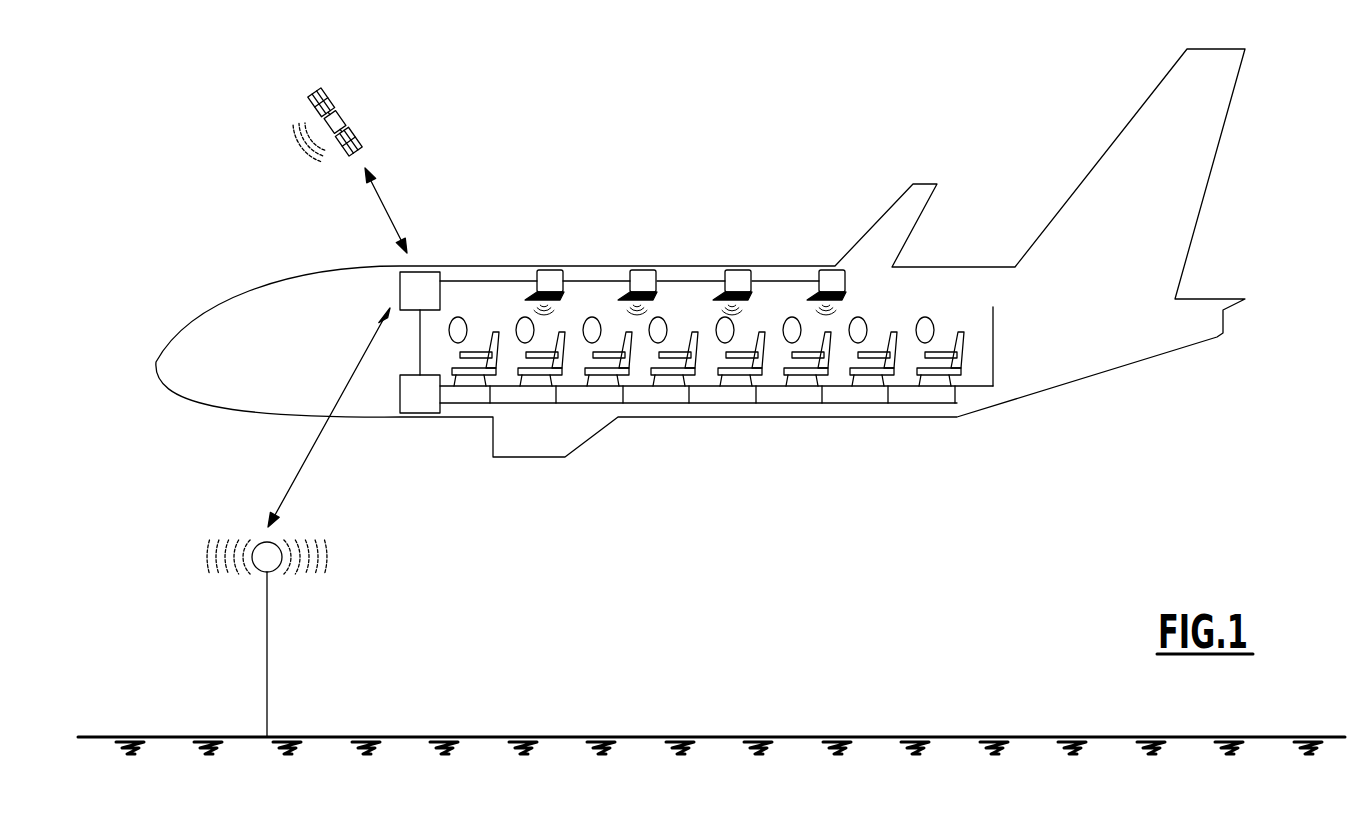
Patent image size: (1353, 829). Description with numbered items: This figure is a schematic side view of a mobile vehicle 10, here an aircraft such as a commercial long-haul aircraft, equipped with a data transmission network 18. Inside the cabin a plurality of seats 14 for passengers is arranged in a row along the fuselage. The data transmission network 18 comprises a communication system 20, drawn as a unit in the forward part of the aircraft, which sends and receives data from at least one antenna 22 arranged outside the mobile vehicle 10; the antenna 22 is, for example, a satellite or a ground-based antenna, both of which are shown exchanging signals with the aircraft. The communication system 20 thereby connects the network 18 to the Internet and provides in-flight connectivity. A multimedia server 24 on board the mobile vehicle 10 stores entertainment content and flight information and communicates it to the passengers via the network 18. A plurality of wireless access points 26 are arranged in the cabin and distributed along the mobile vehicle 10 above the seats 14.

The mobile vehicle 10 is at (1008, 470).
The seats 14 is at (737, 384).
The data transmission network 18 is at (645, 418).
The communication system 20 is at (418, 286).
The antenna 22 is at (342, 93).
The multimedia server 24 is at (414, 402).
The wireless access points 26 is at (830, 282).